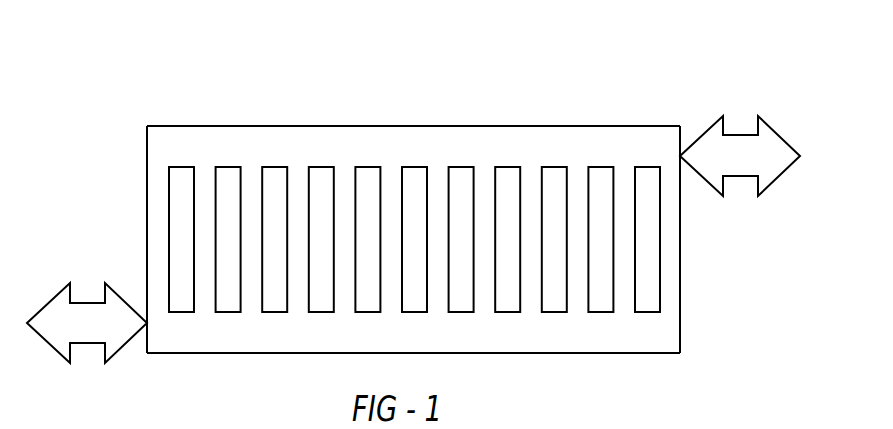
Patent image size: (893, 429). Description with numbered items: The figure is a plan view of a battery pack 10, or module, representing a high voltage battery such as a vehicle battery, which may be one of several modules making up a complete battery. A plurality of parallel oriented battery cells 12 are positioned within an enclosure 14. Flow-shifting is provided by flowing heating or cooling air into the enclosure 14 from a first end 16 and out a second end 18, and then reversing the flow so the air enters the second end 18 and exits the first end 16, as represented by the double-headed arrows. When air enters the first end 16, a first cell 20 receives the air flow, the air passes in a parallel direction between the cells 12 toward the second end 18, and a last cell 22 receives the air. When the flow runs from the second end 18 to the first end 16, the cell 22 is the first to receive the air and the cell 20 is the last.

The battery pack 10 is at (489, 48).
The battery cells 12 is at (325, 175).
The enclosure 14 is at (547, 126).
The first end 16 is at (147, 230).
The second end 18 is at (680, 333).
The first cell 20 is at (182, 179).
The last cell 22 is at (645, 288).